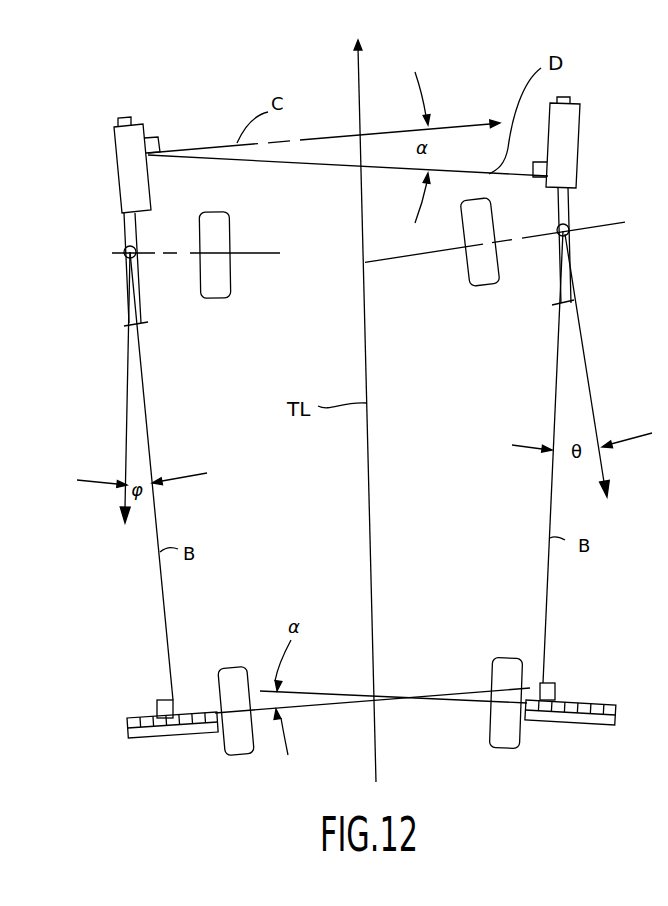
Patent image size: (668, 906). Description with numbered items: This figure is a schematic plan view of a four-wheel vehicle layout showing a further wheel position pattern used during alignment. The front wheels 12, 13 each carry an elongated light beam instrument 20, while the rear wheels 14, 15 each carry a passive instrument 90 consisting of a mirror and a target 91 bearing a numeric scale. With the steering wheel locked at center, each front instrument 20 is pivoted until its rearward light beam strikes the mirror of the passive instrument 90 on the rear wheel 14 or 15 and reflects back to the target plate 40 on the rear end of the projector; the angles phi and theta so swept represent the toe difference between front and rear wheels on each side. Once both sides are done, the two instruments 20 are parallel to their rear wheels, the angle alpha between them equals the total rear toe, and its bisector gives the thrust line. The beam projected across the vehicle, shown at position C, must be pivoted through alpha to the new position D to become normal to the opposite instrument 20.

The front wheel 12 is at (213, 291).
The front wheel 13 is at (477, 282).
The rear wheel 14 is at (238, 672).
The rear wheel 15 is at (505, 667).
The light beam instrument 20 is at (105, 190).
The target plate 40 is at (129, 327).
The passive instrument 90 is at (130, 705).
The target 91 is at (188, 739).